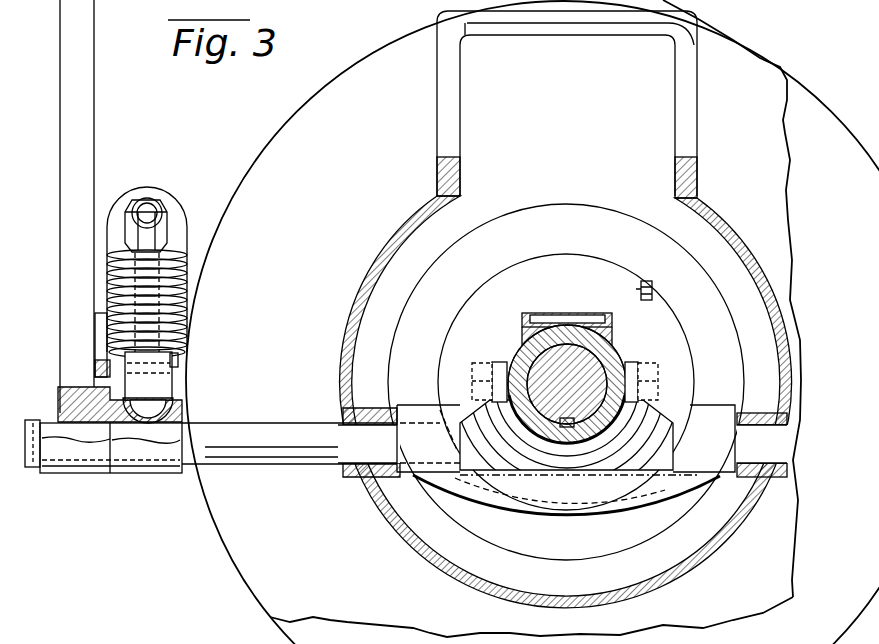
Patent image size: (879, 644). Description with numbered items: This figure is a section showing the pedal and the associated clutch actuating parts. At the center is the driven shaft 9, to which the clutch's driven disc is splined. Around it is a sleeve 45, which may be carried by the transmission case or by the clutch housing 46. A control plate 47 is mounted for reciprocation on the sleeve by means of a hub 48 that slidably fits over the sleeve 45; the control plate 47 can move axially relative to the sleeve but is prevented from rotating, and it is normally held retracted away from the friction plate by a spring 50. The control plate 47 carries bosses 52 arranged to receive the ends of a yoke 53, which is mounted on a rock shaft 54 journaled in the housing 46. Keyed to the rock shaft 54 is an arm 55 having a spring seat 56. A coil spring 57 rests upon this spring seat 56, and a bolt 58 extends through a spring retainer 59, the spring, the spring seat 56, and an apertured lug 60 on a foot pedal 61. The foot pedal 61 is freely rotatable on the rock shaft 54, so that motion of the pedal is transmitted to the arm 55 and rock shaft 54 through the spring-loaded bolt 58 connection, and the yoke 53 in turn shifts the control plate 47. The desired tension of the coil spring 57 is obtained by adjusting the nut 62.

The driven shaft 9 is at (537, 417).
The sleeve 45 is at (580, 340).
The clutch housing 46 is at (408, 232).
The control plate 47 is at (573, 210).
The hub 48 is at (540, 333).
The spring 50 is at (653, 292).
The bosses 52 is at (500, 365).
The yoke 53 is at (667, 400).
The rock shaft 54 is at (308, 427).
The arm 55 is at (165, 388).
The spring seat 56 is at (185, 350).
The coil spring 57 is at (190, 300).
The bolt 58 is at (165, 217).
The spring retainer 59 is at (178, 243).
The apertured lug 60 is at (180, 361).
The foot pedal 61 is at (95, 155).
The nut 62 is at (152, 206).